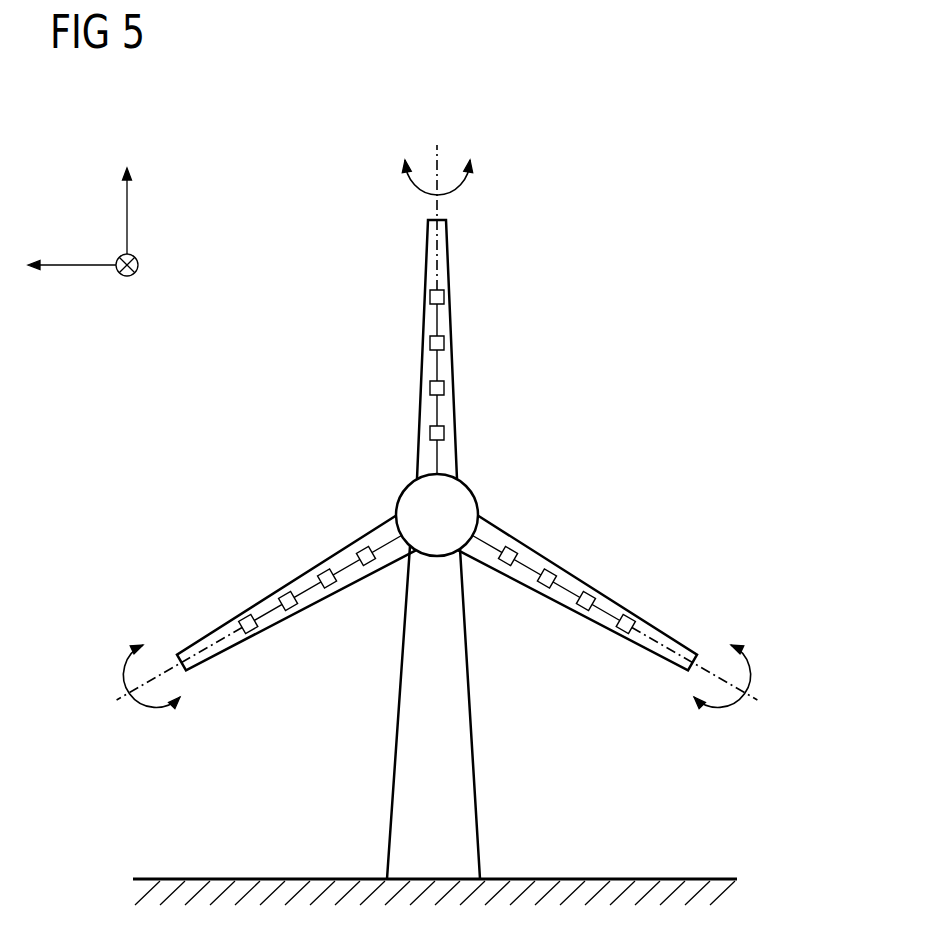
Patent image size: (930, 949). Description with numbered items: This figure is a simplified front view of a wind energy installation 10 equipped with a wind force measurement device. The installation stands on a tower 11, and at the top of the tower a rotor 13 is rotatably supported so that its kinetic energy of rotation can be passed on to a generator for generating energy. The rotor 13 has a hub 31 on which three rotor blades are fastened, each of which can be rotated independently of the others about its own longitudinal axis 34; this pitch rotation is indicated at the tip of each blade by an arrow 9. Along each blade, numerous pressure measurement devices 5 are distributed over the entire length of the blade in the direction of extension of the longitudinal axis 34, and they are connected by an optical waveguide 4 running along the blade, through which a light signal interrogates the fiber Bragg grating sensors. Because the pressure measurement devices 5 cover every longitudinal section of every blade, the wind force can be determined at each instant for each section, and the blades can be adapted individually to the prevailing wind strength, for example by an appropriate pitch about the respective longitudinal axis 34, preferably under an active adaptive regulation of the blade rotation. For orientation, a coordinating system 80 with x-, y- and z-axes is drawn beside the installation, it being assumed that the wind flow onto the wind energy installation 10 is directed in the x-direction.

The optical waveguide 4 is at (438, 370).
The pressure measurement device 5 is at (430, 295).
The arrow 9 is at (465, 188).
The wind energy installation 10 is at (737, 199).
The tower 11 is at (463, 798).
The rotor 13 is at (576, 438).
The hub 31 is at (417, 503).
The longitudinal axis 34 is at (441, 162).
The coordinating system 80 is at (97, 230).